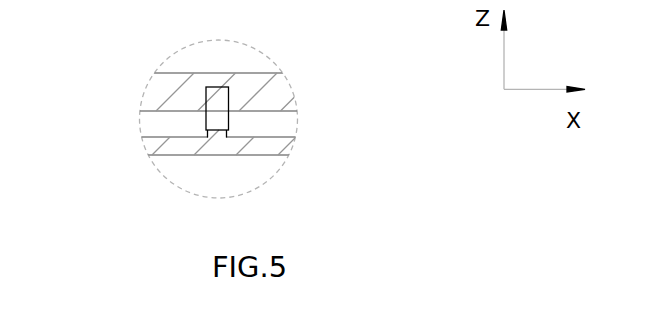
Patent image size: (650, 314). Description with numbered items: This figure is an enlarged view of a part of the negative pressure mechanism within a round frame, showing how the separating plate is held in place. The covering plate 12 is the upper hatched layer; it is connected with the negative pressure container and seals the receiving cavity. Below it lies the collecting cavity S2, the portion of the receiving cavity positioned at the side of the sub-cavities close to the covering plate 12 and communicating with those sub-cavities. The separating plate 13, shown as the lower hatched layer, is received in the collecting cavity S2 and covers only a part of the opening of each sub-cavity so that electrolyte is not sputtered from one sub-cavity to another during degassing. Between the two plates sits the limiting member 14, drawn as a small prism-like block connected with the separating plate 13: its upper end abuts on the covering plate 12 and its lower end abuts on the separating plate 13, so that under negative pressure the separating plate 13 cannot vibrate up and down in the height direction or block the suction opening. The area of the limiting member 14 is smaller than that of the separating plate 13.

The covering plate 12 is at (160, 90).
The separating plate 13 is at (225, 148).
The limiting member 14 is at (212, 117).
The collecting cavity S2 is at (290, 136).